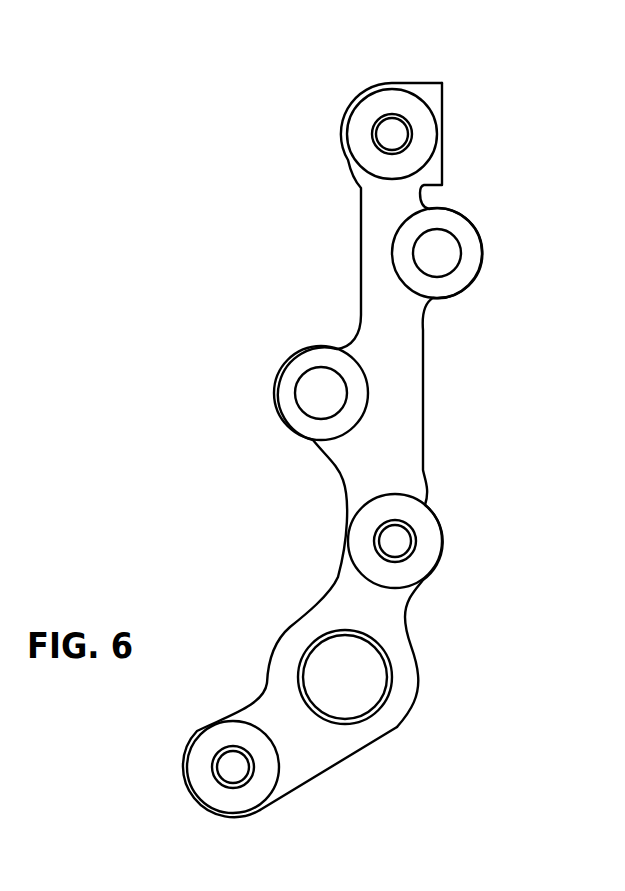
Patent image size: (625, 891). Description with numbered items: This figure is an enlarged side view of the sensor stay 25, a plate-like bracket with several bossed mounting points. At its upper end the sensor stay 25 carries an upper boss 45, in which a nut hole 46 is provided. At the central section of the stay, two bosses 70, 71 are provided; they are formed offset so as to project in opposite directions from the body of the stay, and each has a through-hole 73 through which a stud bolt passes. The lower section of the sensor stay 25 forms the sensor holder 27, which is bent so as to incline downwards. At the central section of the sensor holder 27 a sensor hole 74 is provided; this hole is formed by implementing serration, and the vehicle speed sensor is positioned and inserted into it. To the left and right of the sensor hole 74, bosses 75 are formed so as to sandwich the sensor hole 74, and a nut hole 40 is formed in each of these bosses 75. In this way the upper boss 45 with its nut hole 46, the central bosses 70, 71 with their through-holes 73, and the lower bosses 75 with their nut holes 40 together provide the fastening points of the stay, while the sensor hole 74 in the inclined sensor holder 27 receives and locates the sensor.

The sensor stay 25 is at (347, 189).
The sensor holder 27 is at (337, 750).
The nut hole 40 is at (412, 532).
The upper boss 45 is at (388, 100).
The nut hole 46 is at (402, 128).
The boss 70 is at (477, 250).
The boss 71 is at (280, 395).
The through-hole 73 is at (447, 240).
The sensor hole 74 is at (370, 673).
The boss 75 is at (423, 558).